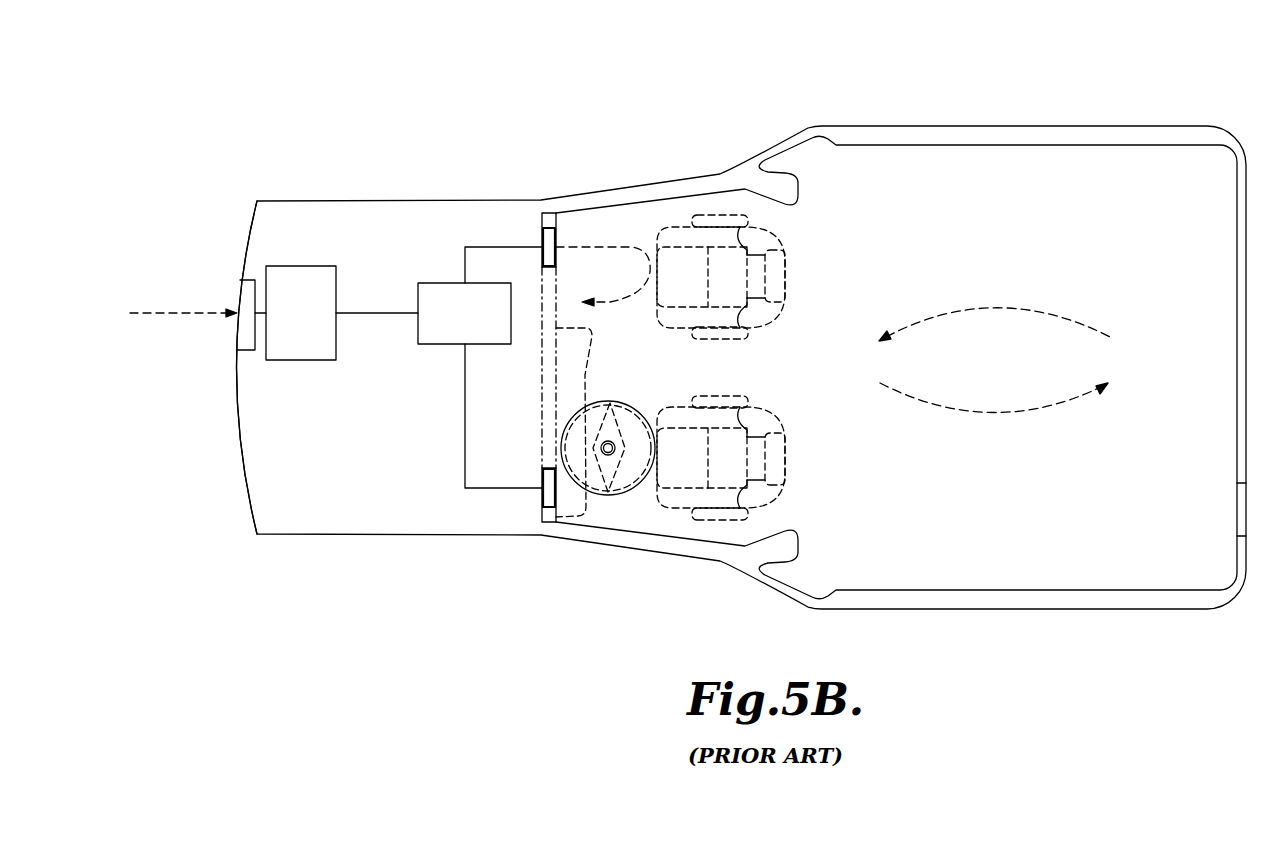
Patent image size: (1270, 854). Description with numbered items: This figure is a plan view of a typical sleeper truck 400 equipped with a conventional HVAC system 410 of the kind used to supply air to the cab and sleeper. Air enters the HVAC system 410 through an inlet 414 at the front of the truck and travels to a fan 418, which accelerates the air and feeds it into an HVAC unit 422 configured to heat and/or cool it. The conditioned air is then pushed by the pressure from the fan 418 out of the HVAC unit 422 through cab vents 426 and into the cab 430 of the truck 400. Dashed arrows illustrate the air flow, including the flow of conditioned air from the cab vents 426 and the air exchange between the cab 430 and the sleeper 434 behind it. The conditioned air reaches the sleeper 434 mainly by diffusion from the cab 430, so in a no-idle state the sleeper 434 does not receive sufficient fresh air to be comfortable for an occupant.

The truck 400 is at (502, 88).
The HVAC system 410 is at (374, 382).
The inlet 414 is at (242, 350).
The fan 418 is at (314, 324).
The HVAC unit 422 is at (478, 324).
The cab vents 426 is at (542, 240).
The cab 430 is at (643, 218).
The sleeper 434 is at (998, 162).